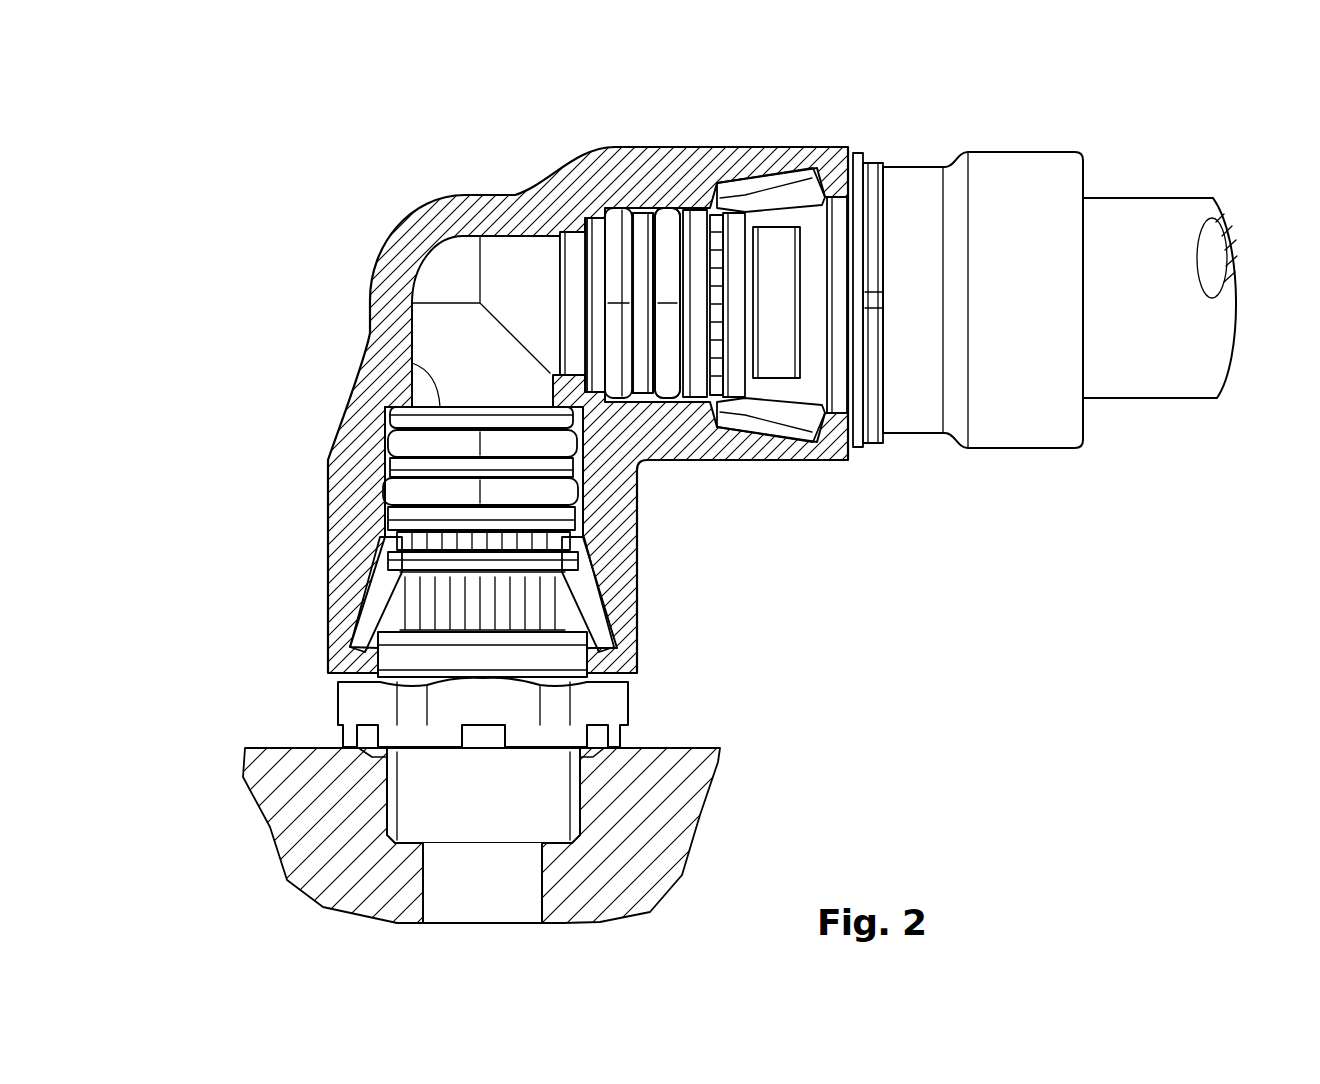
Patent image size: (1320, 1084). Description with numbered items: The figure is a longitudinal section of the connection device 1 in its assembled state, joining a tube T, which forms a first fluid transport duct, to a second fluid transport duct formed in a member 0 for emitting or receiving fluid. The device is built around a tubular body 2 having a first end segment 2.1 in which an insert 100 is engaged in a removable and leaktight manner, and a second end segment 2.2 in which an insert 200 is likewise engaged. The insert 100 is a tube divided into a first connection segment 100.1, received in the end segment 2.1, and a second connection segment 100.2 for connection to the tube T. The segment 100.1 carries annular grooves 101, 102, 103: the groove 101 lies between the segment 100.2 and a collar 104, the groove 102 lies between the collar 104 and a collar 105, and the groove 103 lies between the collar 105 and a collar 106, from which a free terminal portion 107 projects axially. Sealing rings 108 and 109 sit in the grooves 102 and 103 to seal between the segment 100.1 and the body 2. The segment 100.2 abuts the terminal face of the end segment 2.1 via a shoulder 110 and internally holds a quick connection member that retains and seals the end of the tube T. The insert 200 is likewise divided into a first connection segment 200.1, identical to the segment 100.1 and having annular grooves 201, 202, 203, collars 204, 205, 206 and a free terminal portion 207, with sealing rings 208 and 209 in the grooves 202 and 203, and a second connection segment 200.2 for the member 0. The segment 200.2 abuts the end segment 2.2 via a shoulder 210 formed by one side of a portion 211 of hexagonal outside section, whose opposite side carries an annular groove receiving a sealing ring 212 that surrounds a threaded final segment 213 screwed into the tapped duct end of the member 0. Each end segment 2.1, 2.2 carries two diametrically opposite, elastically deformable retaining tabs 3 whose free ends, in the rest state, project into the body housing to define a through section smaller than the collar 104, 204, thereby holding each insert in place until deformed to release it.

The connection device 1 is at (872, 123).
The tubular body 2 is at (660, 542).
The first end segment 2.1 is at (722, 160).
The second end segment 2.2 is at (327, 545).
The retaining tab 3 is at (765, 183).
The insert 100 is at (722, 349).
The first connection segment 100.1 is at (627, 207).
The second connection segment 100.2 is at (915, 165).
The annular groove 101 is at (790, 423).
The annular groove 102 is at (718, 398).
The annular groove 103 is at (683, 400).
The collar 104 is at (745, 425).
The collar 105 is at (660, 400).
The collar 106 is at (632, 403).
The free terminal portion 107 is at (513, 235).
The sealing ring 108 is at (668, 207).
The sealing ring 109 is at (618, 205).
The shoulder 110 is at (827, 440).
The insert 200 is at (512, 588).
The first connection segment 200.1 is at (512, 398).
The second connection segment 200.2 is at (618, 700).
The annular groove 201 is at (403, 605).
The annular groove 202 is at (397, 497).
The annular groove 203 is at (405, 440).
The collar 204 is at (398, 585).
The collar 205 is at (393, 462).
The collar 206 is at (383, 415).
The free terminal portion 207 is at (398, 355).
The sealing ring 208 is at (397, 487).
The sealing ring 209 is at (398, 432).
The shoulder 210 is at (603, 667).
The portion of hexagonal outside section 211 is at (560, 715).
The sealing ring 212 is at (408, 760).
The threaded final segment 213 is at (520, 823).
The member for emitting or receiving fluid 0 is at (660, 542).
The tube T is at (1168, 215).